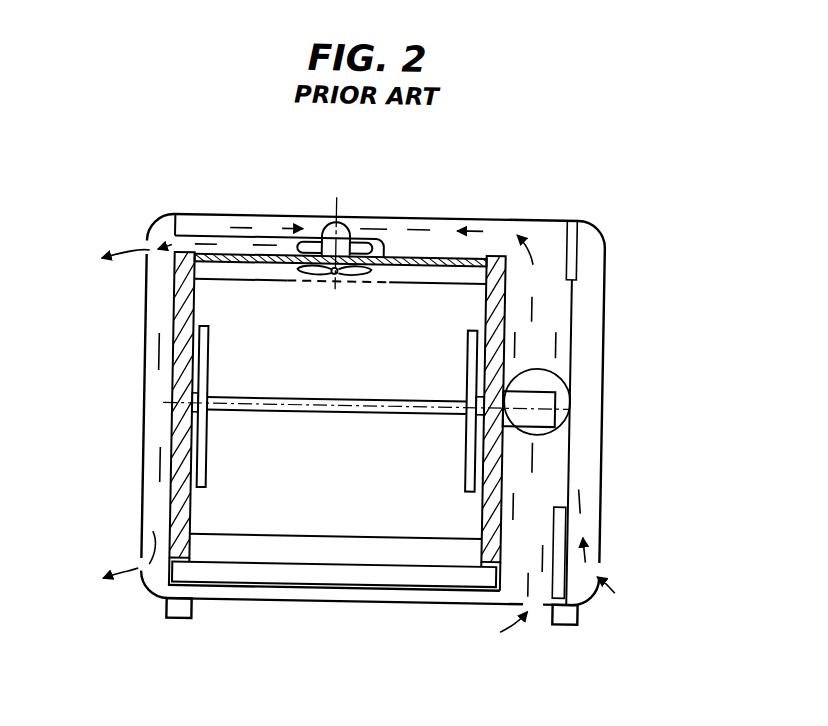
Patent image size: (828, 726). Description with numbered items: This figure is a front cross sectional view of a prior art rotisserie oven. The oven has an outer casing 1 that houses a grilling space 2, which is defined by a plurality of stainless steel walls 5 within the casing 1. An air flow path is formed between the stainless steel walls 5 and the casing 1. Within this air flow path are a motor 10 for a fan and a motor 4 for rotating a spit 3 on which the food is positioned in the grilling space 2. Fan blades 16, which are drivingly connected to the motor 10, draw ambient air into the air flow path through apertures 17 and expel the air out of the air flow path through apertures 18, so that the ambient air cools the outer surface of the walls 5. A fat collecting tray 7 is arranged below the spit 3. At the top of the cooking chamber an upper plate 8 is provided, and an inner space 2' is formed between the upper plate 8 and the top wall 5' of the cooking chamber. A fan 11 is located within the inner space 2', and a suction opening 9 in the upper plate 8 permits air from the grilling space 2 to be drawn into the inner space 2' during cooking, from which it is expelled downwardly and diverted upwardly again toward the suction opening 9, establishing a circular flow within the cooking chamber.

The casing 1 is at (439, 217).
The grilling space 2 is at (337, 436).
The inner space 2' is at (329, 216).
The spit 3 is at (292, 414).
The motor 4 is at (560, 395).
The stainless steel walls 5 is at (337, 403).
The top wall 5' is at (342, 293).
The fat collecting tray 7 is at (341, 588).
The upper plate 8 is at (254, 285).
The suction opening 9 is at (350, 285).
The motor 10 is at (323, 229).
The fan 11 is at (310, 279).
The fan blades 16 is at (358, 244).
The apertures 17 is at (595, 568).
The apertures 18 is at (142, 249).